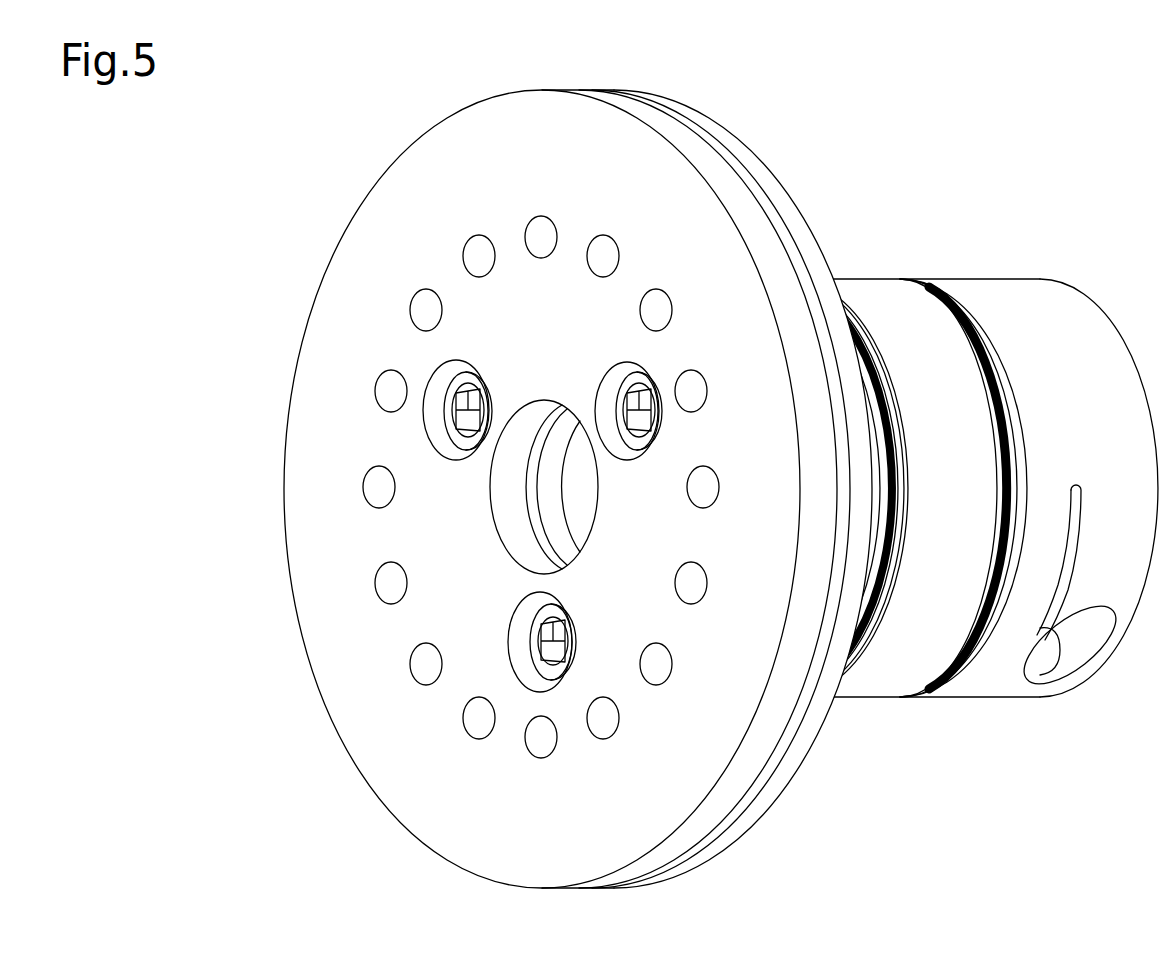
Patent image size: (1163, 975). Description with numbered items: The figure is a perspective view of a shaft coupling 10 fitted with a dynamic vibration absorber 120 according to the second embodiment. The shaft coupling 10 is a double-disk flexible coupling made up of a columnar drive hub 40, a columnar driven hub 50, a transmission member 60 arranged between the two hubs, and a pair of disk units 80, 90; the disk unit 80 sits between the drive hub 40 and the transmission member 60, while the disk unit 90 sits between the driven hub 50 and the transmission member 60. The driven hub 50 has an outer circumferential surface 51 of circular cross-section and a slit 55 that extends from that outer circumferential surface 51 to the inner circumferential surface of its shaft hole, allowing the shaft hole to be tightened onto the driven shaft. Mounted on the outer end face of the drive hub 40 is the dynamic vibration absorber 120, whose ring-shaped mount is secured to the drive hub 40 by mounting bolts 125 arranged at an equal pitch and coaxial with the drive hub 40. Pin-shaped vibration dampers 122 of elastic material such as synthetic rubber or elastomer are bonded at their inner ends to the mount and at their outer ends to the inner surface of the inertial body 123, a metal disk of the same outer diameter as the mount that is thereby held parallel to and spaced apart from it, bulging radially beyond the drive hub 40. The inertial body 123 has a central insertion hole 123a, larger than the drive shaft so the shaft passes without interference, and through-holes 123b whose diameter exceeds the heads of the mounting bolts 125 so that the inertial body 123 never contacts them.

The shaft coupling 10 is at (1097, 236).
The drive hub 40 is at (892, 410).
The disk unit 80 is at (898, 430).
The transmission member 60 is at (922, 315).
The driven hub 50 is at (1000, 293).
The disk unit 90 is at (997, 390).
The outer circumferential surface 51 is at (1068, 305).
The slit 55 is at (1078, 531).
The dynamic vibration absorber 120 is at (639, 70).
The vibration dampers 122 is at (425, 302).
The inertial body 123 is at (514, 100).
The insertion hole 123a is at (517, 533).
The through-holes 123b is at (447, 370).
The mounting bolts 125 is at (448, 448).